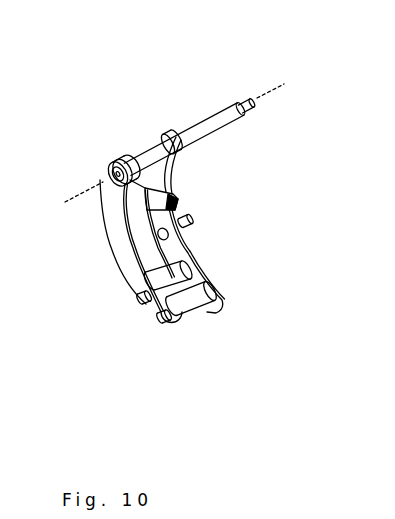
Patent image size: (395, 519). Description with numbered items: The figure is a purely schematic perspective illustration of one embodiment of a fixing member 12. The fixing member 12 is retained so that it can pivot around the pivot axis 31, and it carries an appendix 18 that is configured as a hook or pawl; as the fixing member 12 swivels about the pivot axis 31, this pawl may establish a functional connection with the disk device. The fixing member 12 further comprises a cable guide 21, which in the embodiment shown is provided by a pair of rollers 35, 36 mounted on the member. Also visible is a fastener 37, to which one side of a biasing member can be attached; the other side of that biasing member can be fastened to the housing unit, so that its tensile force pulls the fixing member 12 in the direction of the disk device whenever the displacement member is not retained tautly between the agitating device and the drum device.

The fixing member 12 is at (103, 95).
The pivot axis 31 is at (262, 93).
The appendix 18 is at (180, 201).
The fastener 37 is at (192, 227).
The roller 36 is at (176, 286).
The roller 35 is at (200, 298).
The cable guide 21 is at (154, 306).